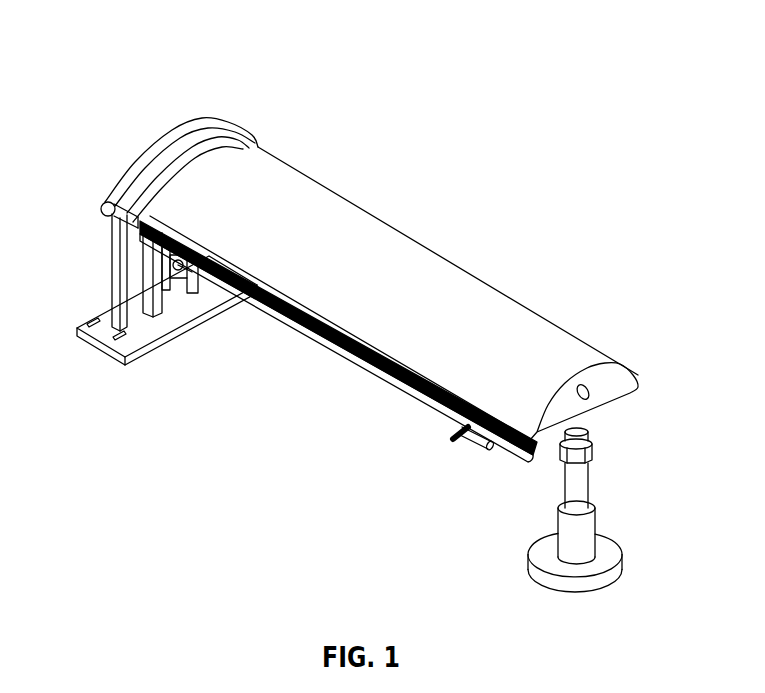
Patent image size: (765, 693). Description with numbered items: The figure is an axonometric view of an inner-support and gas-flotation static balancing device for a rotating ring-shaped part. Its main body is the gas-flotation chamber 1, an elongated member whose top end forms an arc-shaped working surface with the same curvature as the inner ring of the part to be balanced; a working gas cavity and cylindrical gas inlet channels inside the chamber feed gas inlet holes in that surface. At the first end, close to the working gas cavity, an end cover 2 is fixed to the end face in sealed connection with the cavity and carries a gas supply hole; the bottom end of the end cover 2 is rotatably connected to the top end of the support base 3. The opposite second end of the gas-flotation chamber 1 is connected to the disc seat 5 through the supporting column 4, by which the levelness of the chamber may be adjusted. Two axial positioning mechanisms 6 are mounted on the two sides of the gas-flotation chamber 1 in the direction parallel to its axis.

The gas-flotation chamber 1 is at (394, 226).
The end cover 2 is at (169, 117).
The support base 3 is at (150, 263).
The supporting column 4 is at (514, 496).
The disc seat 5 is at (598, 509).
The axial positioning mechanism 6 is at (460, 459).